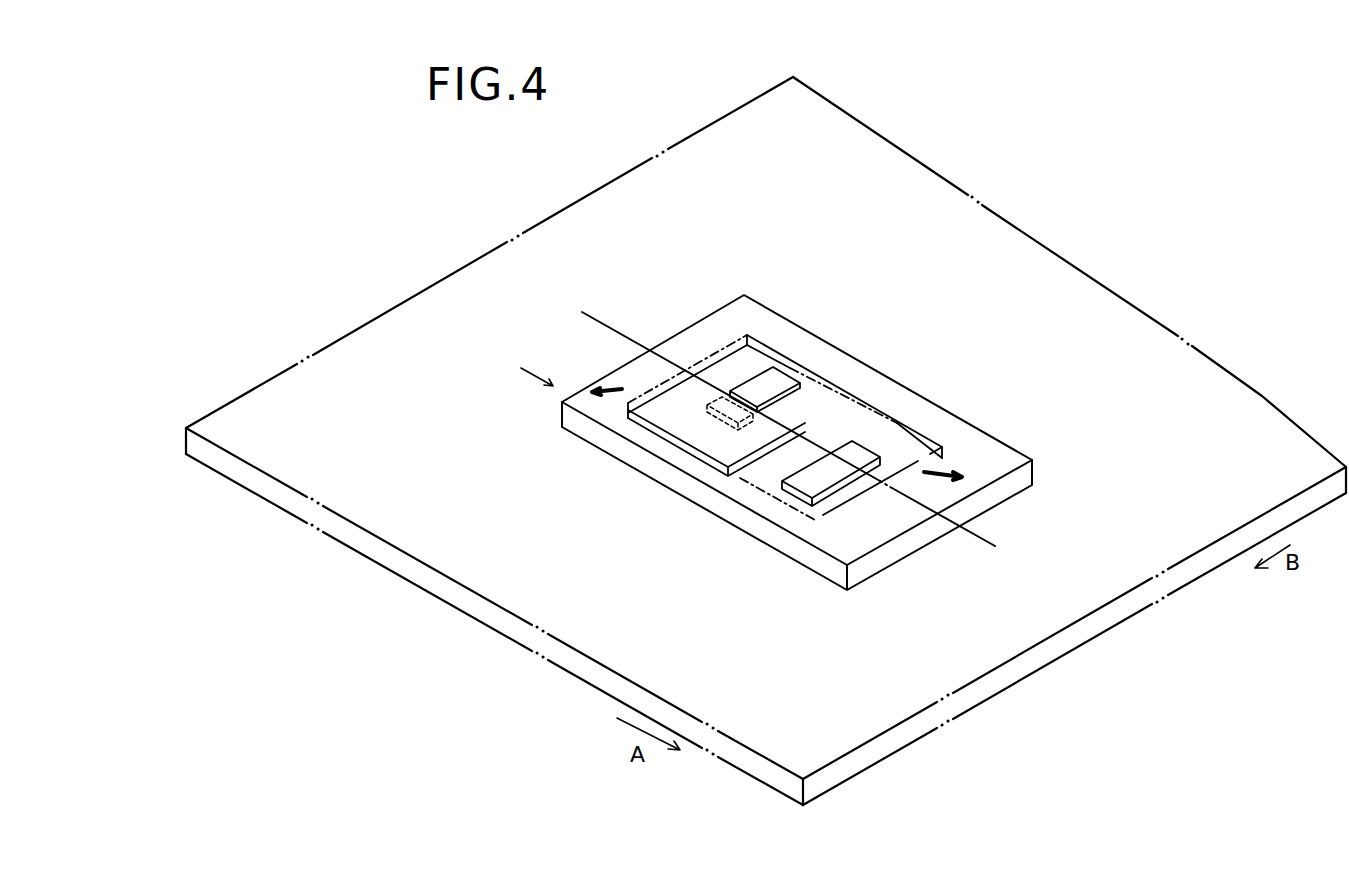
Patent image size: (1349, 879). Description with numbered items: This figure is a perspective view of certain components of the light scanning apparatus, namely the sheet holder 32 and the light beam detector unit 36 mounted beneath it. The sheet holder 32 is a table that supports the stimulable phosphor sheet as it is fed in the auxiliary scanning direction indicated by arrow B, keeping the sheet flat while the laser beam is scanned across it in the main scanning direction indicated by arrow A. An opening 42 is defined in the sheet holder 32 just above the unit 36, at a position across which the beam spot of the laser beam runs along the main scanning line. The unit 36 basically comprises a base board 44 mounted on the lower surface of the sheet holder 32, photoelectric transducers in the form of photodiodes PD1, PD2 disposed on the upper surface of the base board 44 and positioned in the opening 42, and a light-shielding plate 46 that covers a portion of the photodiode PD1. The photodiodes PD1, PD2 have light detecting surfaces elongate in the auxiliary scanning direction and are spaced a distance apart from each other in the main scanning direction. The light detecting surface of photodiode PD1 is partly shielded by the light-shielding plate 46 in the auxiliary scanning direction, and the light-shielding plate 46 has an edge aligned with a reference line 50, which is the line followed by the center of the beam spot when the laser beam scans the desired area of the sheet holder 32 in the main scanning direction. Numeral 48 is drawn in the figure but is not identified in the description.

The sheet holder 32 is at (1106, 592).
The unit 36 is at (729, 413).
The opening 42 is at (862, 413).
The base board 44 is at (970, 438).
The light-shielding plate 46 is at (672, 442).
The recess 48 is at (853, 412).
The reference line 50 is at (633, 340).
The photodiode PD1 is at (790, 380).
The photodiode PD2 is at (833, 473).